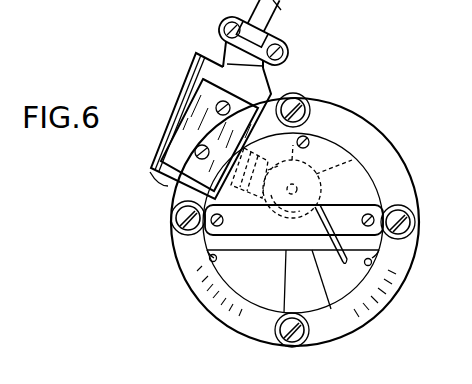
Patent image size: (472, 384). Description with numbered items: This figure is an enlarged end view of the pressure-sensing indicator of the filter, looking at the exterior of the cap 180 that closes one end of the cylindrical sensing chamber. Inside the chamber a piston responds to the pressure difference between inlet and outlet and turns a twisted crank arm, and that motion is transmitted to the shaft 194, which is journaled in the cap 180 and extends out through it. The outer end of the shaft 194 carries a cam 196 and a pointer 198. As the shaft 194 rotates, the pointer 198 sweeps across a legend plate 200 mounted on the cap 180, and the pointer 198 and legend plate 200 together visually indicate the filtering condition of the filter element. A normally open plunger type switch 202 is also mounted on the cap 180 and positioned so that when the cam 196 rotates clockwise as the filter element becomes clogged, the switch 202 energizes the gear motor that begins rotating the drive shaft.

The cap 180 is at (398, 278).
The shaft 194 is at (325, 136).
The cam 196 is at (352, 163).
The pointer 198 is at (236, 243).
The legend plate 200 is at (207, 250).
The plunger type switch 202 is at (205, 99).